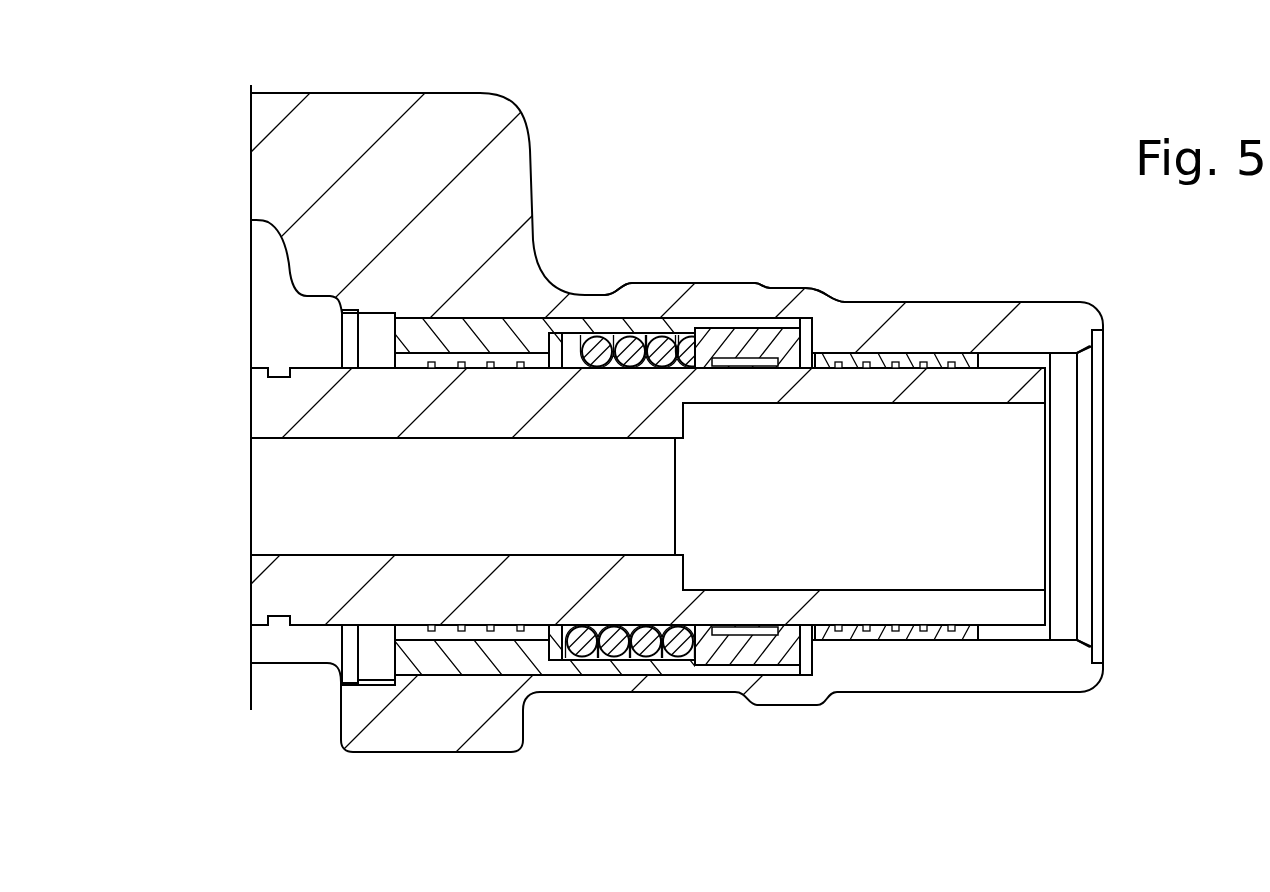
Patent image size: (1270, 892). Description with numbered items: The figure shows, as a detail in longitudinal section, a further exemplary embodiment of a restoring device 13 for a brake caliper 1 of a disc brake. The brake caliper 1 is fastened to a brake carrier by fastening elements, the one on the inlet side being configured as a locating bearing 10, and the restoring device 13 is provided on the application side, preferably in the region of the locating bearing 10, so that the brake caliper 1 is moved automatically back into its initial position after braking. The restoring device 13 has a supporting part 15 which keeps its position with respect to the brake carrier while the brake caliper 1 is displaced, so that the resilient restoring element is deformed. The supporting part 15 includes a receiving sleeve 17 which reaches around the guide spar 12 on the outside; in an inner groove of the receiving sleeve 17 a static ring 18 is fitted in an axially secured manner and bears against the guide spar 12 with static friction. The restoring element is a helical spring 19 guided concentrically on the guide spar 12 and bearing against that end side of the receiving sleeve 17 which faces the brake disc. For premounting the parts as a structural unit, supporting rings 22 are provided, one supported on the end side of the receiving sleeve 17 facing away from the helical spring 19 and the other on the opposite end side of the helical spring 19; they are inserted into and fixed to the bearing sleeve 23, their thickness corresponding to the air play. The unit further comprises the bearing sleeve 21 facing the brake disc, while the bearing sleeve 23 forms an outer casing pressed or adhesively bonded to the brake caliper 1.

The brake caliper 1 is at (473, 113).
The locating bearing 10 is at (318, 740).
The guide spar 12 is at (997, 515).
The restoring device 13 is at (696, 296).
The supporting part 15 is at (724, 385).
The receiving sleeve 17 is at (758, 648).
The static ring 18 is at (760, 366).
The helical spring 19 is at (582, 643).
The bearing sleeve 21 is at (480, 362).
The supporting rings 22 is at (552, 340).
The bearing sleeve 23 is at (418, 340).